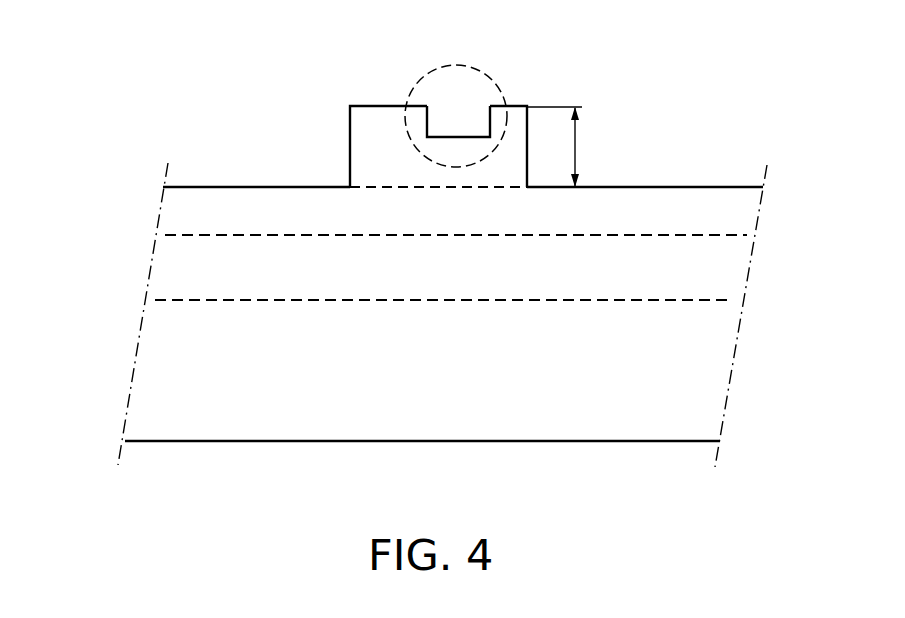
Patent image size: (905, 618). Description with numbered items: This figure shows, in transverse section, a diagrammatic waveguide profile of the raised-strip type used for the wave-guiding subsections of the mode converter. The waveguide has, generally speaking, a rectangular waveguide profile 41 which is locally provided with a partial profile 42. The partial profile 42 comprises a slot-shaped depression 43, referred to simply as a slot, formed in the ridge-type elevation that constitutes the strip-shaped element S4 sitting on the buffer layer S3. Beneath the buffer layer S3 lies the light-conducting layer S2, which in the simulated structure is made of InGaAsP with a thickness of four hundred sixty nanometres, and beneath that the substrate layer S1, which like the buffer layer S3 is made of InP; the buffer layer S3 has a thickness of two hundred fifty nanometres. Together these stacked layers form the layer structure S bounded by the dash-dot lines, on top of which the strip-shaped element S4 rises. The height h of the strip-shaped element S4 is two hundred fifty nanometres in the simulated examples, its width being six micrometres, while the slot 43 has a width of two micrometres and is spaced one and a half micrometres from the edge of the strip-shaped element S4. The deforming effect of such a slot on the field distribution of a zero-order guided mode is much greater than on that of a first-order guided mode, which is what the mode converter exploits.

The rectangular waveguide profile 41 is at (349, 105).
The partial profile 42 is at (496, 80).
The slot-shaped depression 43 is at (463, 125).
The strip-shaped element S4 is at (397, 153).
The buffer layer S3 is at (198, 219).
The light-conducting layer S2 is at (197, 263).
The substrate layer S1 is at (190, 332).
The semiconductor substrate S is at (772, 190).
The height of the strip-shaped element h is at (563, 147).